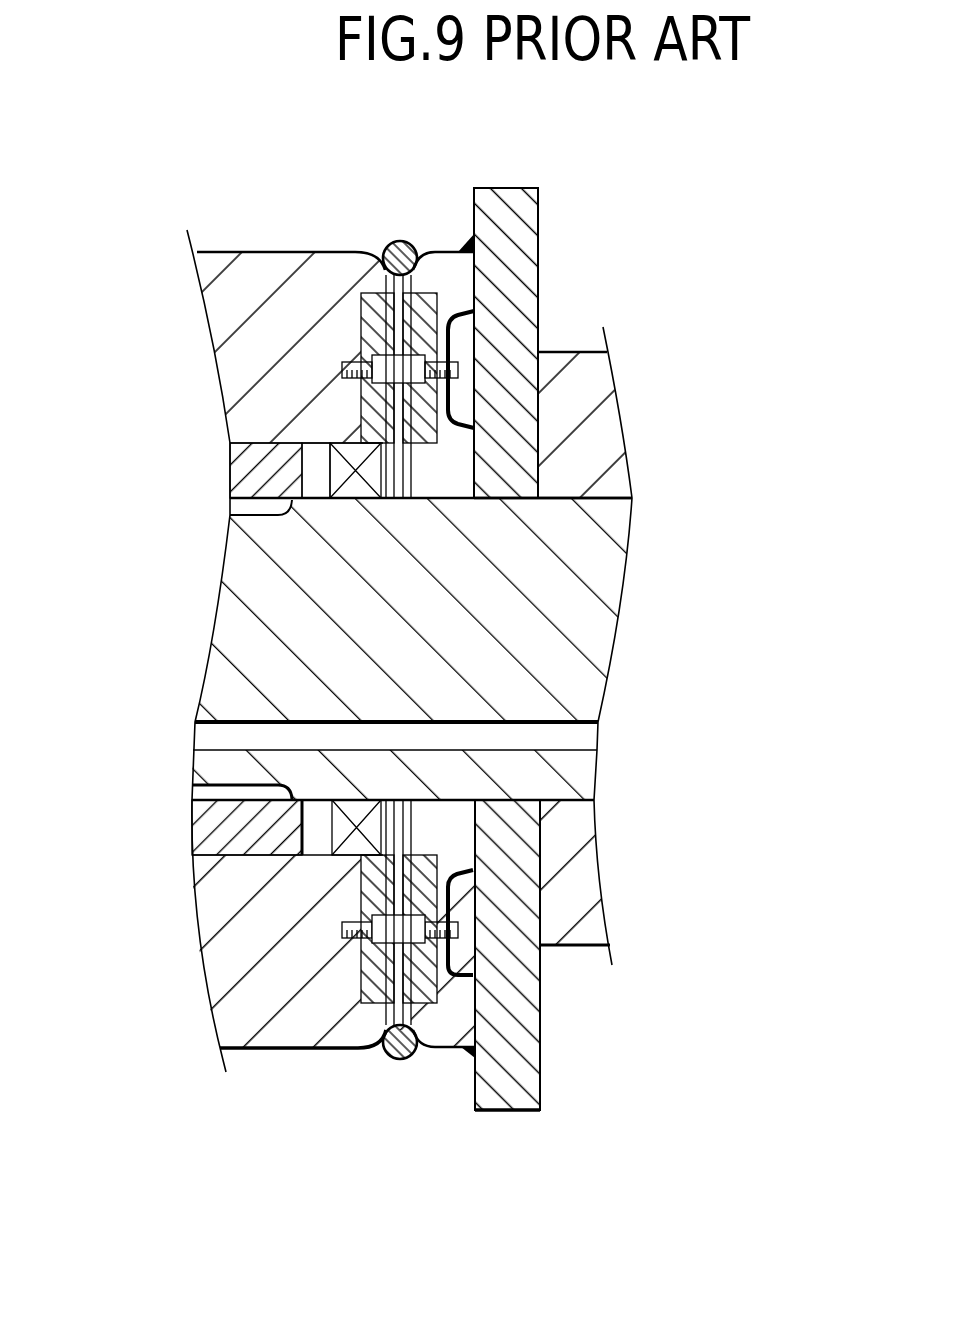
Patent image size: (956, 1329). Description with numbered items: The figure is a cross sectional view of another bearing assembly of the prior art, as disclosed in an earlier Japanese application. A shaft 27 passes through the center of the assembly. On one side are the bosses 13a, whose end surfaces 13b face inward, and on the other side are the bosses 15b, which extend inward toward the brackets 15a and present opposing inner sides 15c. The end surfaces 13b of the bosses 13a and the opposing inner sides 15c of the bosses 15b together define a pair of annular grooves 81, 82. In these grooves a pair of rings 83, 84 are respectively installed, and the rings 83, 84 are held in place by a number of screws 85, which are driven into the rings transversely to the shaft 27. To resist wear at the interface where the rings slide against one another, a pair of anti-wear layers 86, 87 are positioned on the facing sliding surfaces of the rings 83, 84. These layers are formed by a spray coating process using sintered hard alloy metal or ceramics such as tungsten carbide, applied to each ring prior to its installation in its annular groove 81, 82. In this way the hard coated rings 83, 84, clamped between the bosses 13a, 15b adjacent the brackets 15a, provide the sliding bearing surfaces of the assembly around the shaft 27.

The boss 13a is at (213, 287).
The end surface 13b is at (388, 244).
The bracket 15a is at (510, 216).
The boss 15b is at (447, 1052).
The inner side 15c is at (405, 1063).
The rotor shaft 27 is at (245, 632).
The annular groove 81 is at (373, 298).
The annular groove 82 is at (430, 290).
The ring 83 is at (362, 972).
The ring 84 is at (440, 298).
The screw 85 is at (341, 370).
The anti-wear layer 86 is at (362, 879).
The anti-wear layer 87 is at (412, 990).